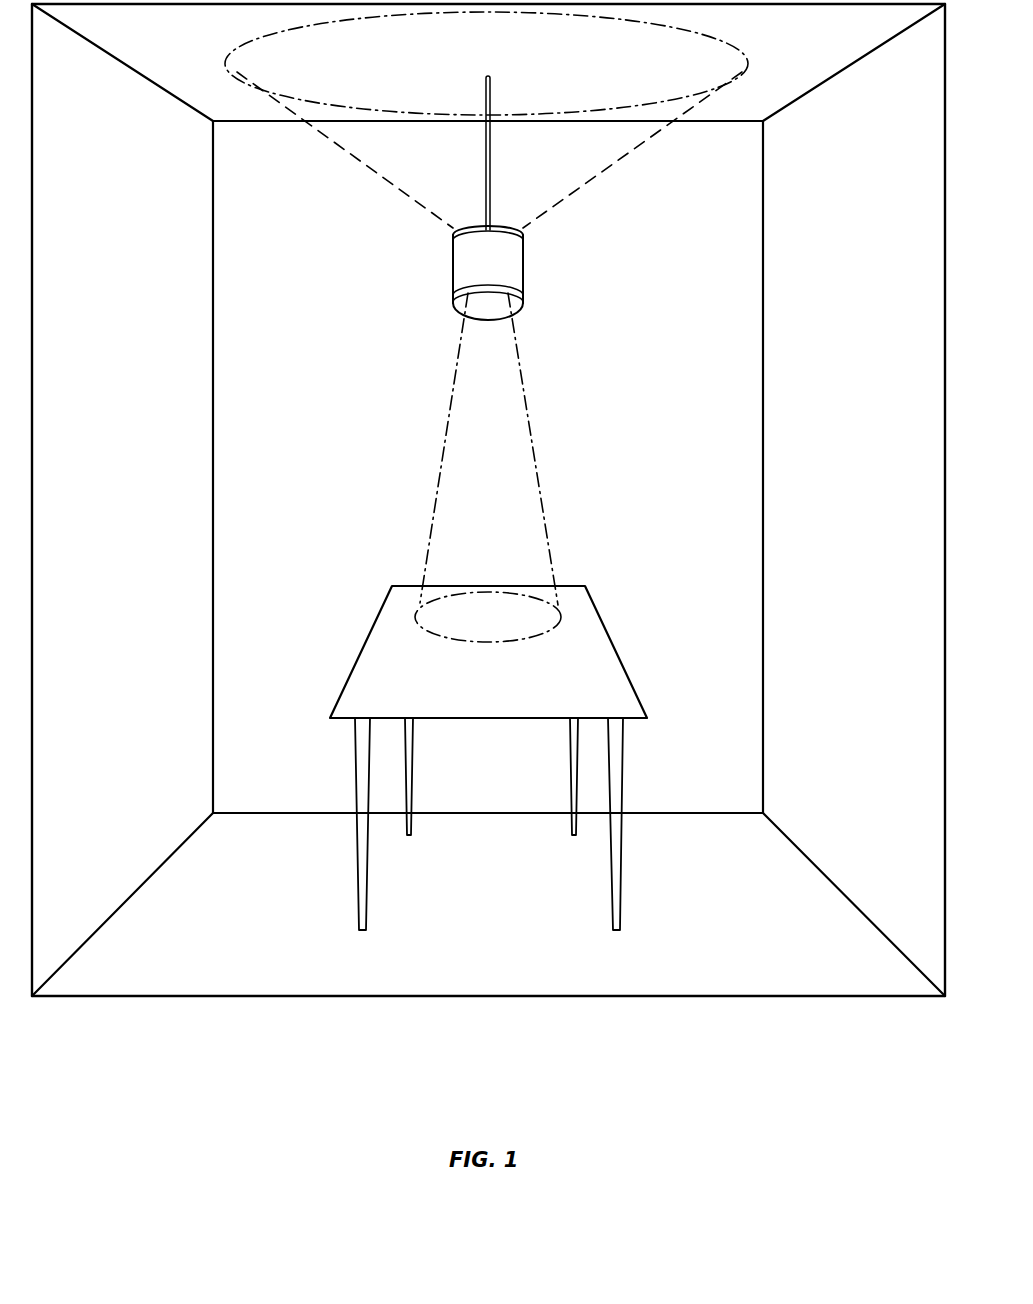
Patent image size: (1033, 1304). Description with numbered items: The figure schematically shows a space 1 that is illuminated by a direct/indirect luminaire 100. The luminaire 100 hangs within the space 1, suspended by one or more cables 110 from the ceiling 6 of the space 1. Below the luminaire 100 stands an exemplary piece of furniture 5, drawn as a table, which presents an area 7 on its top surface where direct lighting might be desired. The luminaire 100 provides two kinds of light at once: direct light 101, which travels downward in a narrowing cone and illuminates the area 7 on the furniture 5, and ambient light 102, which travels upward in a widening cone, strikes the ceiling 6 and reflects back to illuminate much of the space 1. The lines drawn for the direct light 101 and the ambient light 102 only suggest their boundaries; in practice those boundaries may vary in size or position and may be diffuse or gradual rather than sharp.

The space 1 is at (701, 586).
The piece of furniture 5 is at (357, 659).
The ceiling 6 is at (810, 57).
The area 7 is at (496, 629).
The direct/indirect luminaire 100 is at (462, 275).
The direct light 101 is at (533, 463).
The ambient light 102 is at (613, 163).
The cable 110 is at (487, 193).